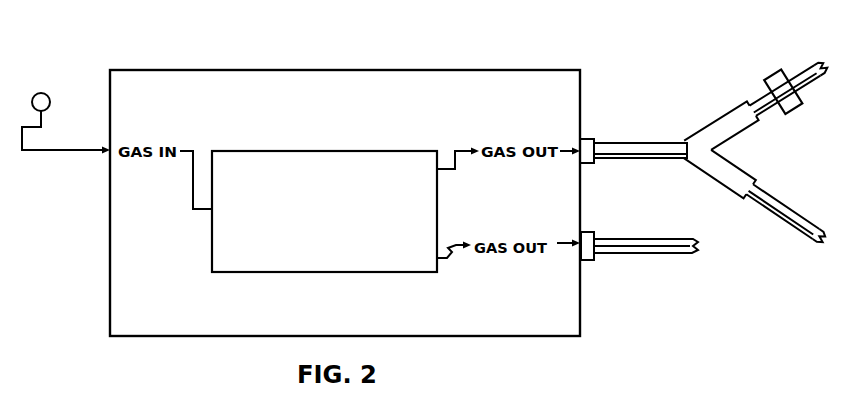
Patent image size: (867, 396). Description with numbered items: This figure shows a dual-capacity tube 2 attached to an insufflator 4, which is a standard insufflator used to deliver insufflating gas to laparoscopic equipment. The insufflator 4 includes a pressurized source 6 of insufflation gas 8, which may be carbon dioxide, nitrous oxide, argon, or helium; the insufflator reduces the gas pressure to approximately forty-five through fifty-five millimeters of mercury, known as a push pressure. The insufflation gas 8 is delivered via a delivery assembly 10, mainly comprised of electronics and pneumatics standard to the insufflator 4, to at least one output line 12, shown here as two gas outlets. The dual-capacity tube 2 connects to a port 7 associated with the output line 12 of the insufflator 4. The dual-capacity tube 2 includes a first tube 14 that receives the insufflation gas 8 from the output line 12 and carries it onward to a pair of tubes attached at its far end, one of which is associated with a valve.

The dual-capacity tube 2 is at (722, 146).
The insufflator 4 is at (549, 36).
The pressurized source 6 is at (45, 93).
The port 7 is at (587, 164).
The insufflation gas 8 is at (58, 152).
The delivery assembly 10 is at (284, 170).
The output line 12 is at (565, 148).
The first tube 14 is at (652, 158).